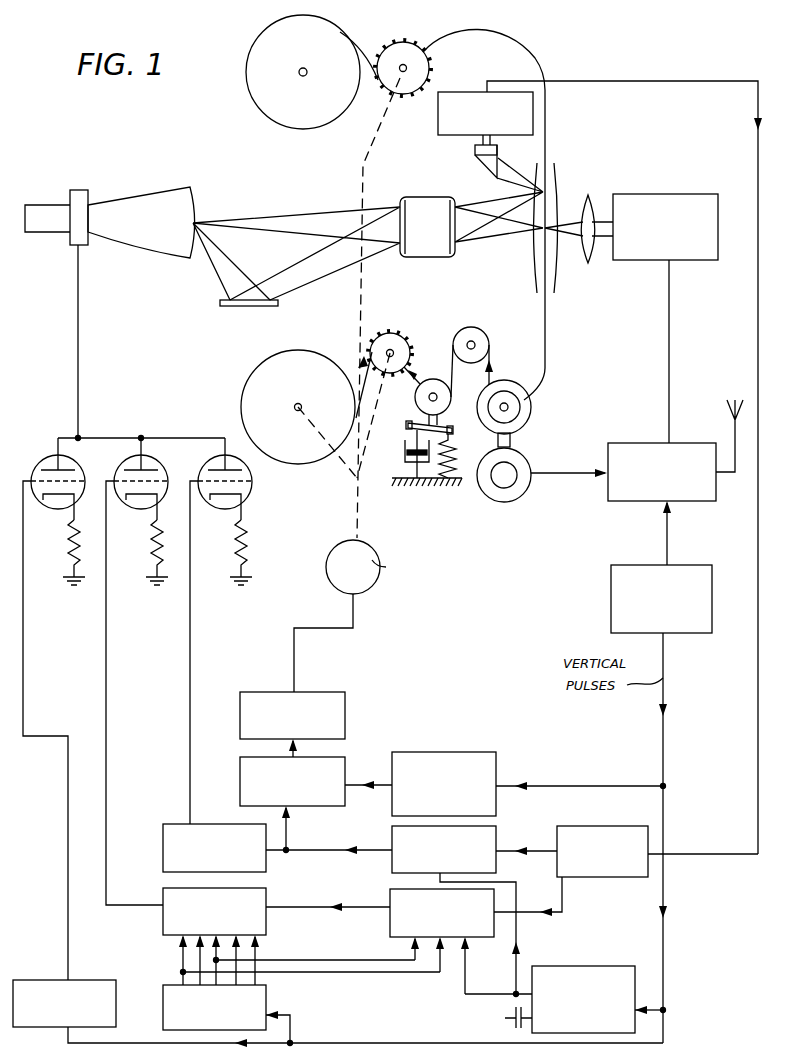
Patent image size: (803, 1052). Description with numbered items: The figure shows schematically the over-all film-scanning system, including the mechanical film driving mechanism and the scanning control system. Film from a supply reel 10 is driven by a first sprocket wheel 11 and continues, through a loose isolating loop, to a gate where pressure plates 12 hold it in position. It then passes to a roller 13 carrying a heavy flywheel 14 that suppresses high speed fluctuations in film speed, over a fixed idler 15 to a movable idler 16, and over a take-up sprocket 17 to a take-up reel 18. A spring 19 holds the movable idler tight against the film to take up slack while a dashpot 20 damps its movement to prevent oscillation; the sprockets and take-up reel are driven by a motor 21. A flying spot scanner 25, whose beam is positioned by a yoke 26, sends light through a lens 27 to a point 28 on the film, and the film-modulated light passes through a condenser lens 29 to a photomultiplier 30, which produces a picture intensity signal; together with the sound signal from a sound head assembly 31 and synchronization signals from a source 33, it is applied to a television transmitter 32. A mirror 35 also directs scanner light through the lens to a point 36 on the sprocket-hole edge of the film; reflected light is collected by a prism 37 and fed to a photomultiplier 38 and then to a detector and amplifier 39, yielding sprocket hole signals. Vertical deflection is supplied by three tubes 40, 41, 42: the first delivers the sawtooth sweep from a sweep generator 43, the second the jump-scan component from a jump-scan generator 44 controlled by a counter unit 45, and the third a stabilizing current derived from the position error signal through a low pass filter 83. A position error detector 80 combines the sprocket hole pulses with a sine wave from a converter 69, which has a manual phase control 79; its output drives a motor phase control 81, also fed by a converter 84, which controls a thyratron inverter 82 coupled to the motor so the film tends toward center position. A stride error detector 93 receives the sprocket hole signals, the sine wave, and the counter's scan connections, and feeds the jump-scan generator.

The supply reel 10 is at (252, 60).
The first sprocket wheel 11 is at (408, 52).
The pressure plates 12 is at (553, 200).
The roller 13 is at (508, 396).
The flywheel 14 is at (532, 414).
The fixed idler 15 is at (476, 330).
The movable idler 16 is at (417, 400).
The take-up sprocket 17 is at (398, 340).
The take-up reel 18 is at (256, 388).
The spring 19 is at (456, 462).
The dashpot 20 is at (403, 460).
The motor 21 is at (368, 582).
The flying spot scanner 25 is at (146, 200).
The yoke 26 is at (78, 198).
The lens 27 is at (417, 204).
The point 28 is at (538, 238).
The condenser lens 29 is at (586, 258).
The photomultiplier 30 is at (683, 260).
The sound head assembly 31 is at (514, 496).
The television transmitter 32 is at (632, 448).
The synchronization signal source 33 is at (611, 582).
The mirror 35 is at (224, 306).
The point 36 is at (551, 178).
The prism 37 is at (480, 168).
The photomultiplier 38 is at (452, 97).
The detector and amplifier 39 is at (570, 834).
The tube 40 is at (42, 462).
The tube 41 is at (128, 462).
The tube 42 is at (210, 462).
The sweep generator 43 is at (100, 1005).
The jump-scan generator 44 is at (163, 920).
The counter unit 45 is at (276, 1005).
The converter 69 is at (564, 968).
The manual control 79 is at (505, 1018).
The position error detector 80 is at (392, 836).
The motor phase control 81 is at (240, 766).
The thyratron inverter 82 is at (266, 696).
The low pass filter 83 is at (172, 826).
The converter 84 is at (402, 754).
The stride error detector 93 is at (390, 893).